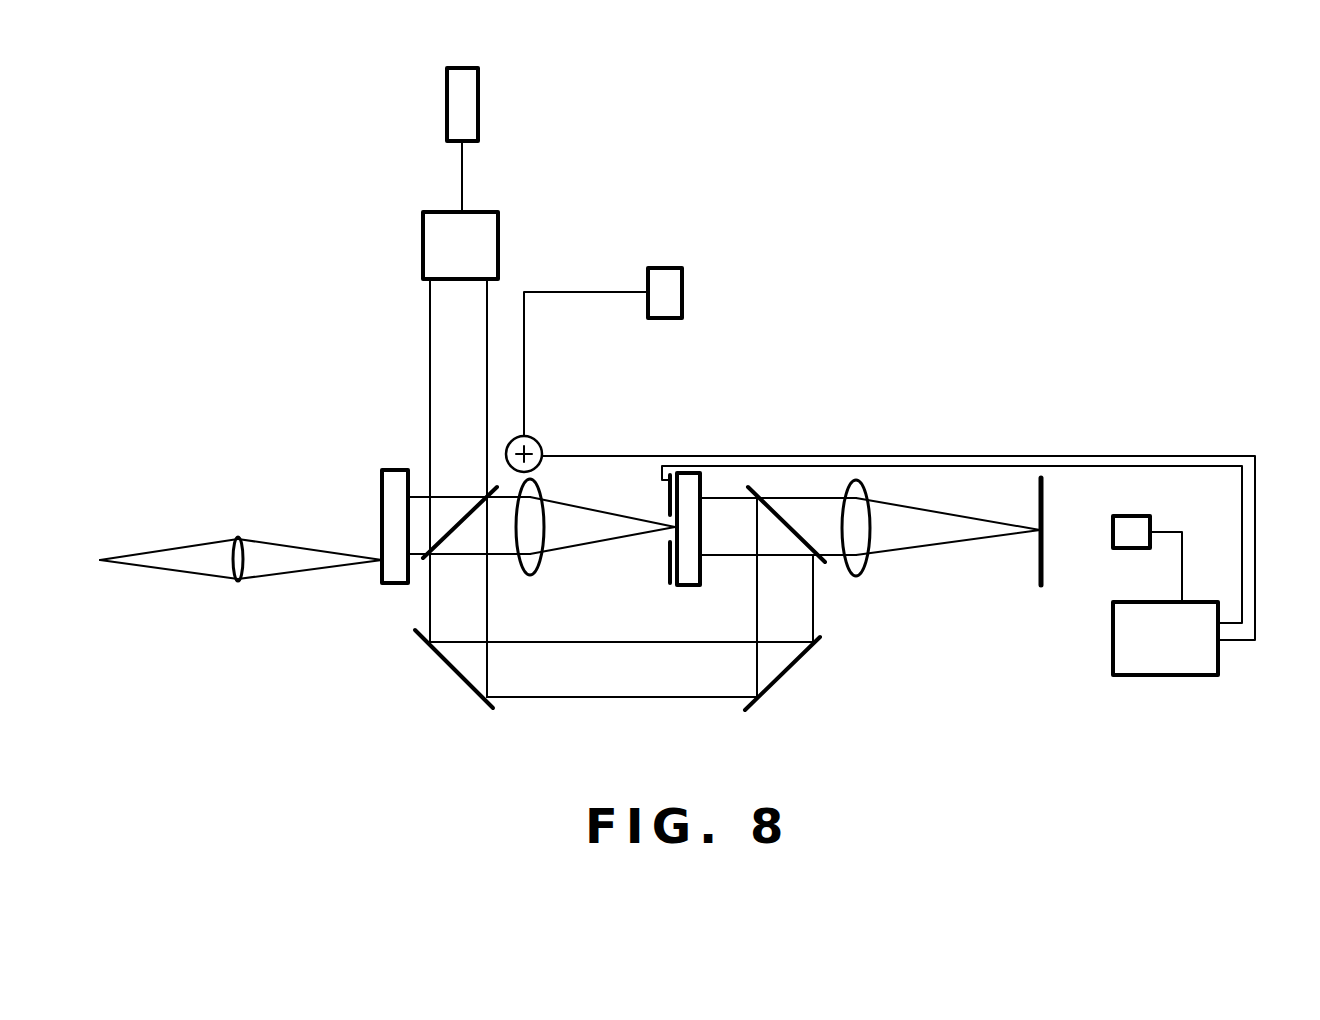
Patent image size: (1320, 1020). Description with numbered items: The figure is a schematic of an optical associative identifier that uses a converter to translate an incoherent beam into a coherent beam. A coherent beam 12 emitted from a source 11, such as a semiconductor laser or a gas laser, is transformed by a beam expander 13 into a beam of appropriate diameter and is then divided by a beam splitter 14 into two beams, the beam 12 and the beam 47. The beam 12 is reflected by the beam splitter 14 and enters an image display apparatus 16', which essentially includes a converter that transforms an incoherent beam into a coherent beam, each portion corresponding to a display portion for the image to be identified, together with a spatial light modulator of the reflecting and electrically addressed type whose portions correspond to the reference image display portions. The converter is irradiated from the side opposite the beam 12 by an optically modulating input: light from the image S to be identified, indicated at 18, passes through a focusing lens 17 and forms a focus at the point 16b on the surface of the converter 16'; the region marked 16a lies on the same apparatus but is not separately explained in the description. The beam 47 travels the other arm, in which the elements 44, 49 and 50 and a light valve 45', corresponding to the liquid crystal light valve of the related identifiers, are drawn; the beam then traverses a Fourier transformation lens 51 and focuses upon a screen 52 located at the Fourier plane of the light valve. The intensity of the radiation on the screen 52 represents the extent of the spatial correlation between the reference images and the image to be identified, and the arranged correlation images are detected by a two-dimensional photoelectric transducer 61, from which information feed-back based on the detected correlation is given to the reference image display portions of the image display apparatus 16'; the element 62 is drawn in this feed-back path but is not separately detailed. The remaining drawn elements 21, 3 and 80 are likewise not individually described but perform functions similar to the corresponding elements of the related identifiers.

The source 11 is at (478, 103).
The coherent beam 12 is at (462, 180).
The beam expander 13 is at (460, 245).
The beam splitter 14 is at (424, 562).
The image display apparatus 16' is at (369, 480).
The first surface of plate 16a is at (382, 525).
The point 16b is at (359, 569).
The focusing lens 17 is at (238, 581).
The light source S 18 is at (93, 546).
The lens 21 is at (540, 562).
The electrode 3 is at (668, 497).
The electro-optic cell 45' is at (709, 485).
The beam splitter mirror 50 is at (755, 492).
The Fourier transformation lens 51 is at (862, 565).
The screen 52 is at (1036, 590).
The two-dimensional photoelectric transducer 61 is at (1148, 518).
The signal processor 62 is at (1165, 638).
The voltage source 80 is at (665, 268).
The mirror 44 is at (458, 675).
The beam 47 is at (608, 698).
The mirror 49 is at (777, 683).